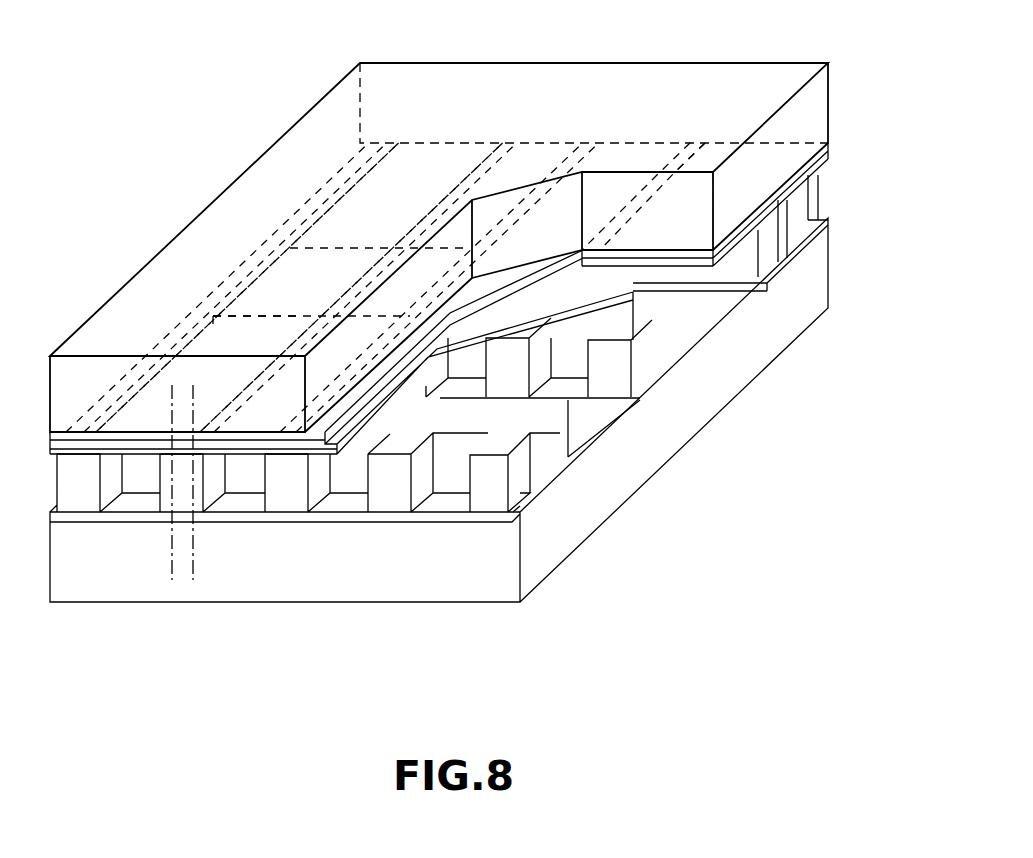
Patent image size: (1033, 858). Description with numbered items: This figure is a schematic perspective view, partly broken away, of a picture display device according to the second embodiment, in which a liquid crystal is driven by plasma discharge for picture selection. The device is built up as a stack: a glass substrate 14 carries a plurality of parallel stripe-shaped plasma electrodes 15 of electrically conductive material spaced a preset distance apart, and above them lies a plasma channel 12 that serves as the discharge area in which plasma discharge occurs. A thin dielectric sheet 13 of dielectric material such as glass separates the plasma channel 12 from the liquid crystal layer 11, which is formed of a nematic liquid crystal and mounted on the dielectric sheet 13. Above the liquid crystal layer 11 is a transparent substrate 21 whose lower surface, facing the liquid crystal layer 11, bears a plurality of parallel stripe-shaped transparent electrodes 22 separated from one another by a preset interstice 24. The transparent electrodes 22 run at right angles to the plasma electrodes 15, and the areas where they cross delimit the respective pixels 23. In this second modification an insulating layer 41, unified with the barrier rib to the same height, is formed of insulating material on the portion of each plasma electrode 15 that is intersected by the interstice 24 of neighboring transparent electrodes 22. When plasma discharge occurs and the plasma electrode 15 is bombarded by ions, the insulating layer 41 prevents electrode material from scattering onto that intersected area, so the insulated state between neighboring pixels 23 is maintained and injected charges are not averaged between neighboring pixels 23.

The liquid crystal layer 11 is at (715, 222).
The plasma channel 12 is at (578, 443).
The dielectric sheet 13 is at (660, 285).
The glass substrate 14 is at (773, 322).
The plasma electrode 15 is at (333, 503).
The transparent substrate 21 is at (810, 110).
The transparent electrode 22 is at (430, 143).
The pixel 23 is at (277, 277).
The interstice 24 is at (690, 150).
The insulating layer 41 is at (390, 487).